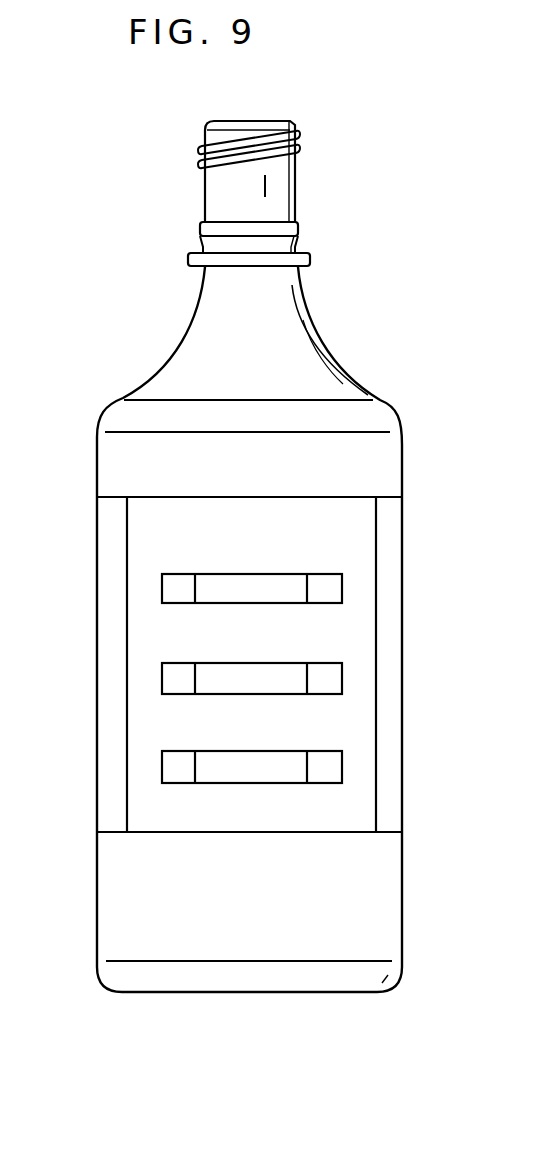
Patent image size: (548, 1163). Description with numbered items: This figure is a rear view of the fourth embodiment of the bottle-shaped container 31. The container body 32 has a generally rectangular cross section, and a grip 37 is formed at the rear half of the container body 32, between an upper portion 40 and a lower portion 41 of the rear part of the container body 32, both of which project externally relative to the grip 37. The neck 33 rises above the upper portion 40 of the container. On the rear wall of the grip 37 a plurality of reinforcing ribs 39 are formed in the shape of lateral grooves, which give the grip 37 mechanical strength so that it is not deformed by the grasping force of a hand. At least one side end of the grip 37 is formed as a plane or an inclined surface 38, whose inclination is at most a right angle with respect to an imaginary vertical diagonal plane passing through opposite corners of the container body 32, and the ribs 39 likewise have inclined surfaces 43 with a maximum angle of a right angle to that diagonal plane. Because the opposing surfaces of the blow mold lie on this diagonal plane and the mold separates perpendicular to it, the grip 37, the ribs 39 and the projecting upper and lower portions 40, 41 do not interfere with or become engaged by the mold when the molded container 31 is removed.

The bottle-shaped container 31 is at (124, 398).
The container body 32 is at (97, 633).
The neck 33 is at (273, 178).
The grip 37 is at (212, 721).
The inclined surface 38 is at (362, 788).
The reinforcing ribs 39 is at (218, 585).
The upper portion 40 is at (368, 434).
The lower portion 41 is at (387, 925).
The inclined surfaces 43 is at (324, 583).